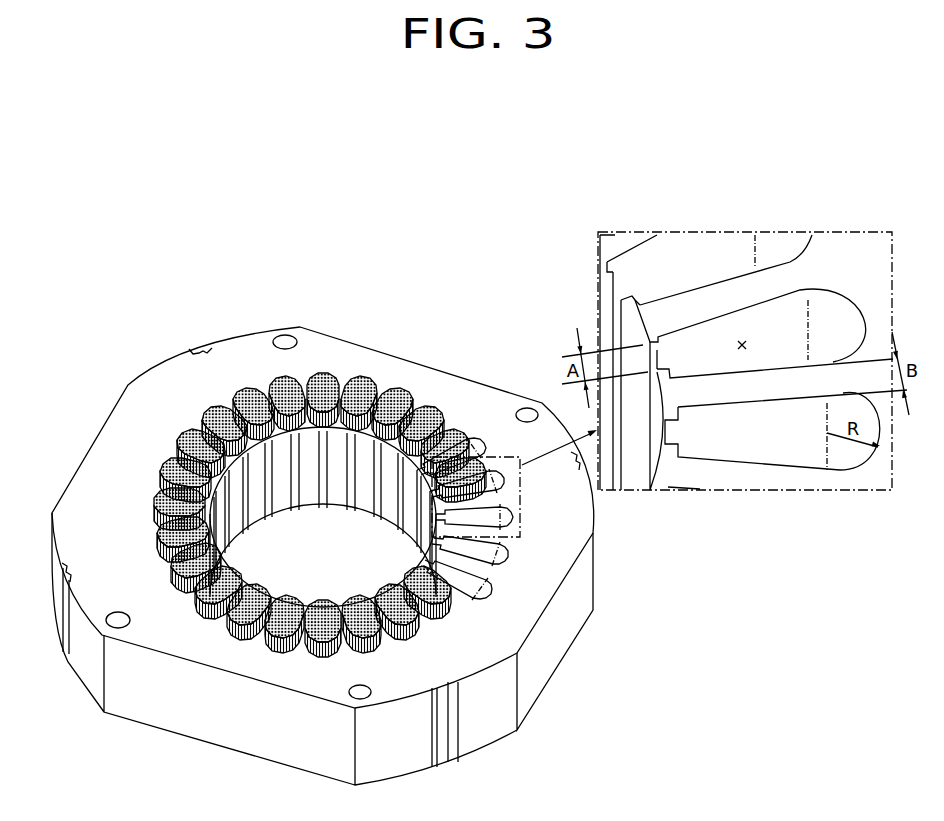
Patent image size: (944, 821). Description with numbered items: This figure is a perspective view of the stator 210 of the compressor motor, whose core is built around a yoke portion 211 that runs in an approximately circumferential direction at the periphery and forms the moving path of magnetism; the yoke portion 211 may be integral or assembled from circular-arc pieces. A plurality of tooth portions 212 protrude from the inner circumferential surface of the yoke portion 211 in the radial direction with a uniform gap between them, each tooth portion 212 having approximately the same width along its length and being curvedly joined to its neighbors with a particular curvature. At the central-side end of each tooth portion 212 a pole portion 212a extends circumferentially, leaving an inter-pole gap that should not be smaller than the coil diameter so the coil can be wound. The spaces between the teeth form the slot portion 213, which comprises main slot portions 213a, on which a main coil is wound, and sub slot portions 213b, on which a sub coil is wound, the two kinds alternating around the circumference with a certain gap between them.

The stator 210 is at (153, 357).
The yoke portion 211 is at (243, 348).
The tooth portion 212 is at (697, 283).
The pole portion 212a is at (608, 262).
The slot portion 213 is at (741, 341).
The main slot portion 213a is at (132, 512).
The sub slot portion 213b is at (414, 408).